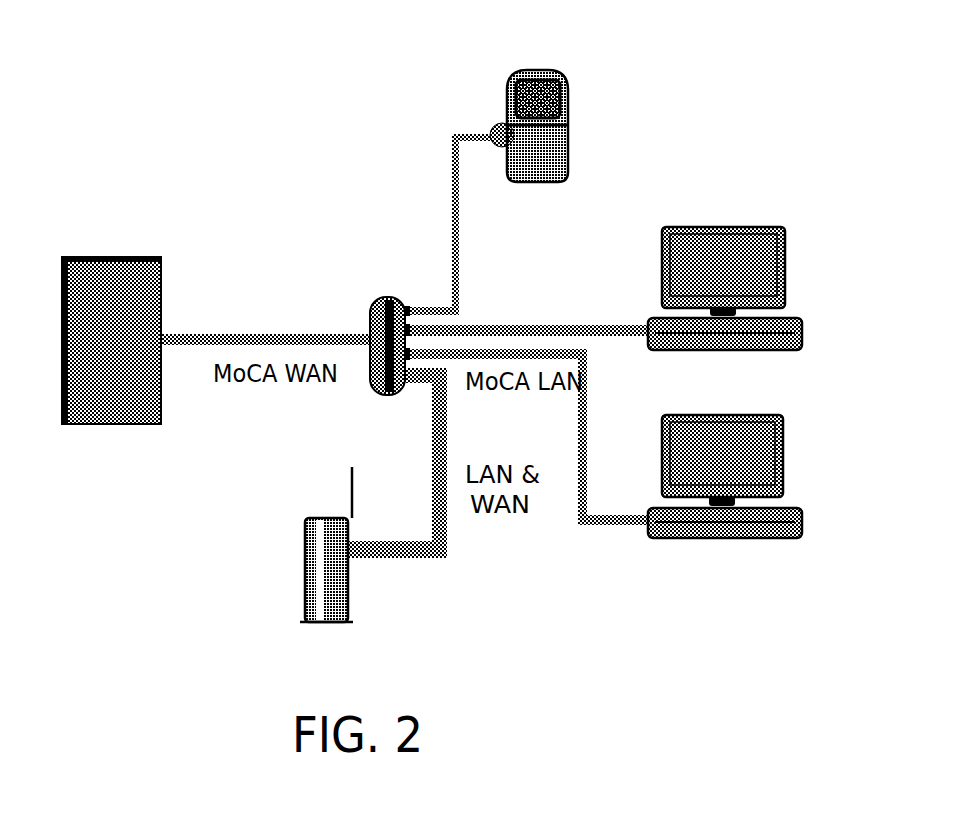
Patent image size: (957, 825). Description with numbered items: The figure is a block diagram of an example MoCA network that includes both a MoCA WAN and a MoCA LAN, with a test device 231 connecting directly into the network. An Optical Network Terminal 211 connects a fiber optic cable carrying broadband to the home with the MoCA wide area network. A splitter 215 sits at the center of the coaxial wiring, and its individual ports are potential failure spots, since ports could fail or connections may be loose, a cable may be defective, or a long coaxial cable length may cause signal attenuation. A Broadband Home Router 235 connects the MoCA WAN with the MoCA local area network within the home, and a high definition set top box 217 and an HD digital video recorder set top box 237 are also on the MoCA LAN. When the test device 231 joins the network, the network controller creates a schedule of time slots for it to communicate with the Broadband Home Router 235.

The Optical Network Terminal (ONT) 211 is at (130, 240).
The splitter 215 is at (365, 270).
The high definition (HD) set top box (STB) 217 is at (765, 223).
The test device 231 is at (510, 50).
The Broadband Home Router (BHR) 235 is at (330, 512).
The HD digital video recorder STB 237 is at (800, 463).